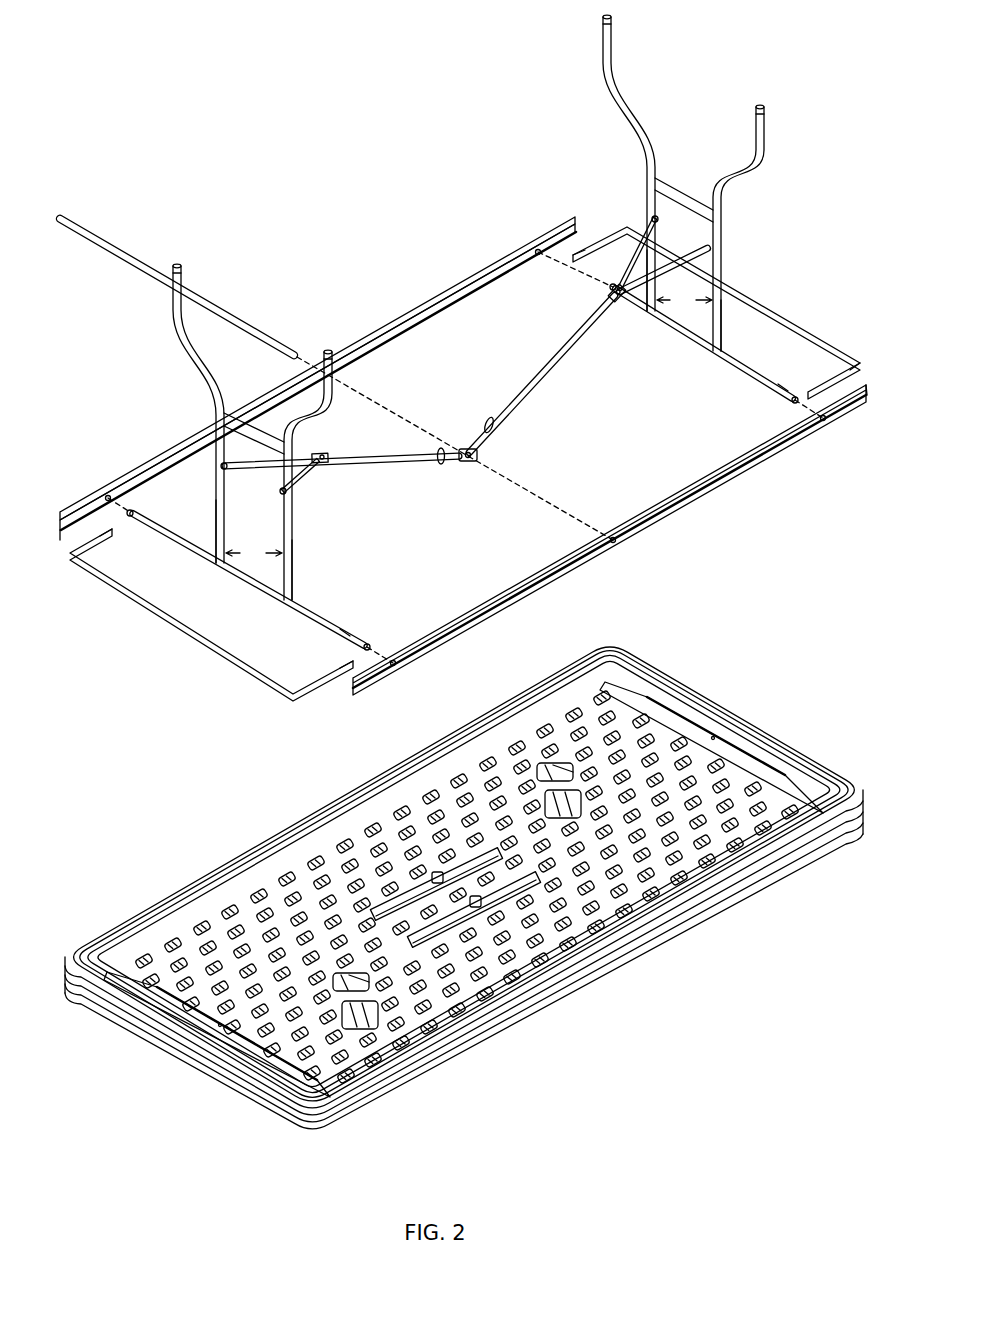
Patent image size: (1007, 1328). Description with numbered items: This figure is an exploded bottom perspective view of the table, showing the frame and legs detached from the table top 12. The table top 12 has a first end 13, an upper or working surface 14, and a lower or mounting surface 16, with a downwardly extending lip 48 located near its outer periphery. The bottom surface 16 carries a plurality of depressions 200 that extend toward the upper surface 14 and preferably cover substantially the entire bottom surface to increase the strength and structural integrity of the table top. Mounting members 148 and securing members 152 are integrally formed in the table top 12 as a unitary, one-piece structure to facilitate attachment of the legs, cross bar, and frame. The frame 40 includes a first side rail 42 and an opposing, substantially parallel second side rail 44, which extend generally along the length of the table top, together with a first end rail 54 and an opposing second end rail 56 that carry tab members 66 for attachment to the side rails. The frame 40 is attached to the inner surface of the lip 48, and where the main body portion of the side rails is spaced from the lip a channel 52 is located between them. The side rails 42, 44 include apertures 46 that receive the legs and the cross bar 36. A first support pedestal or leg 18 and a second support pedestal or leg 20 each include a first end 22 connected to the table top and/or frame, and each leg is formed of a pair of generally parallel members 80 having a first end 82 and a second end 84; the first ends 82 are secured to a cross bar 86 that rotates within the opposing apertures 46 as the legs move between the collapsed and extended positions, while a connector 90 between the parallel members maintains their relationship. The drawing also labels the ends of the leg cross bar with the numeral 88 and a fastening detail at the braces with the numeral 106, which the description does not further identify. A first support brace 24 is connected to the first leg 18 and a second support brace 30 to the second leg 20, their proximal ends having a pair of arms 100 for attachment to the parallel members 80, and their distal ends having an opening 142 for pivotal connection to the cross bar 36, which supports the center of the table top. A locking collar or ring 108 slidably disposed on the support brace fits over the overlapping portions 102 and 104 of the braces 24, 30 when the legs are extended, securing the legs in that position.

The table top 12 is at (187, 1090).
The first end 13 is at (127, 1047).
The upper or working surface 14 is at (612, 970).
The lower or mounting surface 16 is at (650, 932).
The first support pedestal or leg 18 is at (212, 420).
The second support pedestal or leg 20 is at (724, 262).
The first end 22 is at (200, 555).
The first support brace 24 is at (402, 468).
The second support brace 30 is at (535, 378).
The cross bar 36 is at (150, 252).
The frame 40 is at (445, 272).
The first side rail 42 is at (430, 300).
The second side rail 44 is at (680, 505).
The apertures 46 is at (395, 668).
The downwardly extending lip 48 is at (186, 885).
The channel 52 is at (60, 535).
The first end rail 54 is at (160, 615).
The second end rail 56 is at (780, 316).
The tab members 66 is at (100, 540).
The generally parallel members 80 is at (469, 425).
The first end 82 is at (222, 545).
The second end 84 is at (174, 312).
The cross bar 86 is at (342, 630).
The pivot pin 88 is at (138, 510).
The connector 90 is at (240, 418).
The arms 100 is at (280, 492).
The overlapping portion 102 is at (326, 454).
The overlapping portion 104 is at (335, 472).
The fastener 106 is at (320, 472).
The locking collar or ring 108 is at (442, 466).
The opening 142 is at (472, 463).
The mounting members 148 is at (503, 897).
The securing members 152 is at (560, 795).
The depressions 200 is at (722, 884).